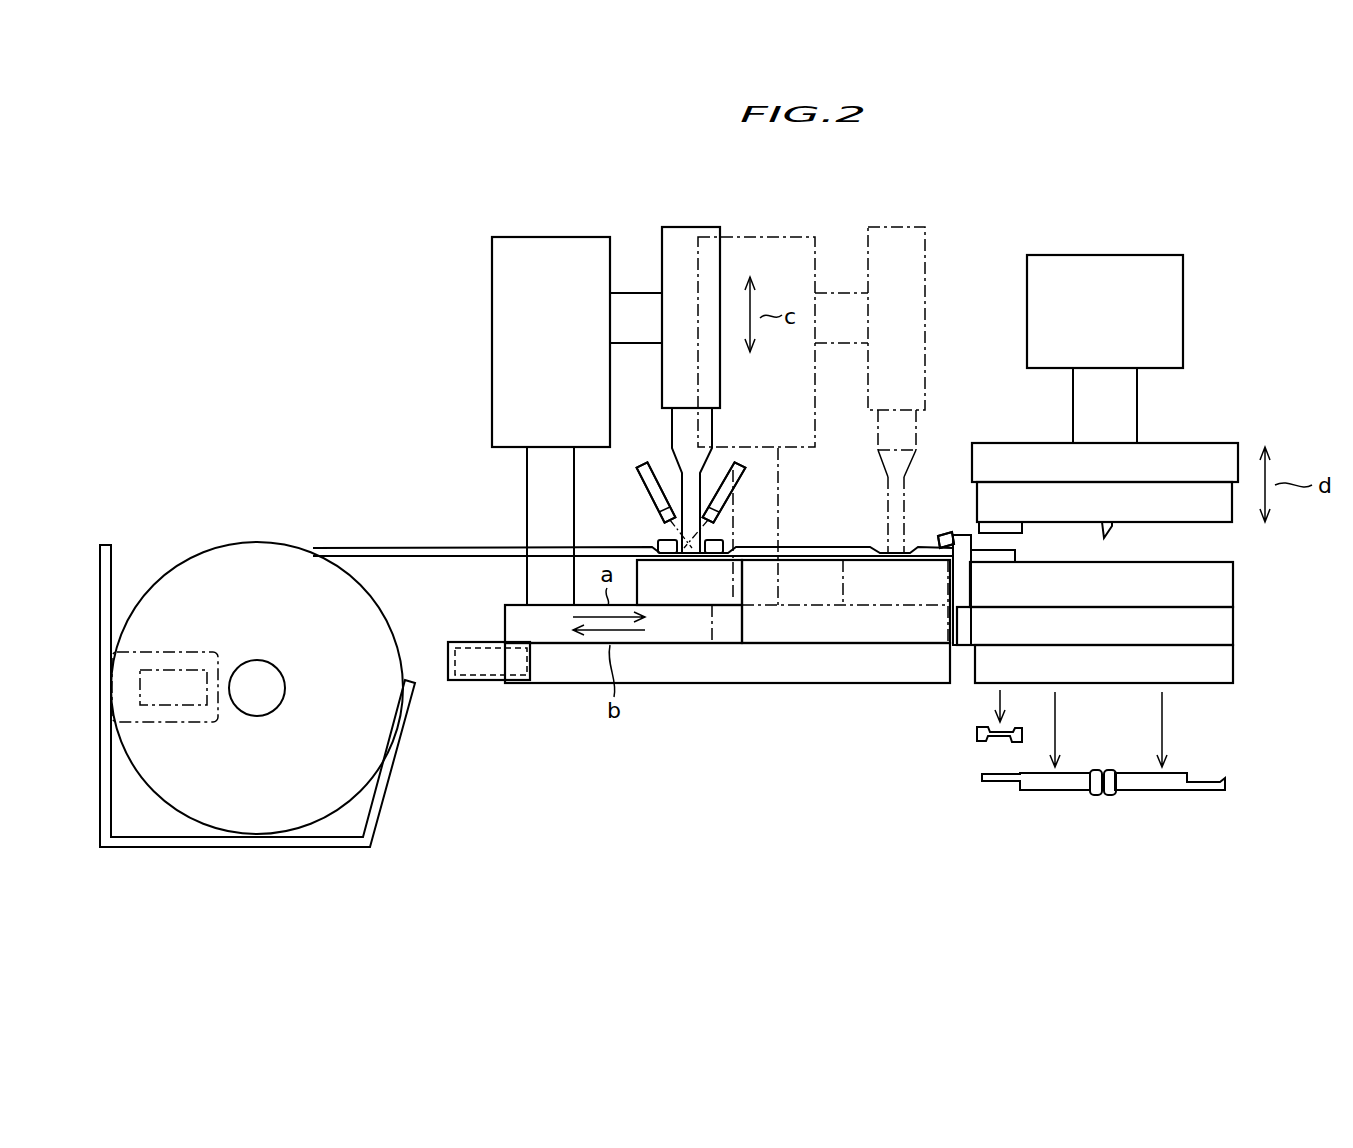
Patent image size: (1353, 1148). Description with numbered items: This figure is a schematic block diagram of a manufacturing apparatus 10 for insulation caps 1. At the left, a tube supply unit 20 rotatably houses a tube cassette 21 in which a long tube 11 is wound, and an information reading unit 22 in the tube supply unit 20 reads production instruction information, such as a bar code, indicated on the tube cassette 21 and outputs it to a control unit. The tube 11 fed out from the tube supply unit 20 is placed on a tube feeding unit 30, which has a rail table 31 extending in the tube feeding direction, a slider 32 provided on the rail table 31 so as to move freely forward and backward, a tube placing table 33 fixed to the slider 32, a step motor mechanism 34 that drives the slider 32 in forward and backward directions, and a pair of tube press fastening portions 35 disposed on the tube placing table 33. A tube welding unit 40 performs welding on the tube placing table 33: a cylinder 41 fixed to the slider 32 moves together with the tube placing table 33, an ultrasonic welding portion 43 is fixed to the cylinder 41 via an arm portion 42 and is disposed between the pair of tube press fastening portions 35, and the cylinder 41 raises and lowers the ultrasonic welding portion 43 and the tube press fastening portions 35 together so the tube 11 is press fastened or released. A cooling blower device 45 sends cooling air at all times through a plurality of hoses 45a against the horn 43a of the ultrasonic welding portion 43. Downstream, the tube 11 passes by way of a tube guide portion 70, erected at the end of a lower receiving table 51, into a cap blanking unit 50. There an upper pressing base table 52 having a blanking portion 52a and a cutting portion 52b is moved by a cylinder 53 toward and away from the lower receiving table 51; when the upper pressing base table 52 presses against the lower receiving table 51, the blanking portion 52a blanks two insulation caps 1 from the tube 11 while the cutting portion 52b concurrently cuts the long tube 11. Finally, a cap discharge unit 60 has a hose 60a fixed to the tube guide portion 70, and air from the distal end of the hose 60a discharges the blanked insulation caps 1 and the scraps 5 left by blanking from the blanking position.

The insulation cap 1 is at (1043, 790).
The scraps 5 is at (977, 732).
The manufacturing apparatus 10 is at (410, 228).
The tube 11 is at (432, 546).
The tube supply unit 20 is at (106, 545).
The tube cassette 21 is at (258, 545).
The information reading unit 22 is at (178, 705).
The tube feeding unit 30 is at (760, 685).
The rail table 31 is at (648, 675).
The slider 32 is at (545, 640).
The tube placing table 33 is at (690, 590).
The step motor mechanism 34 is at (475, 683).
The tube press fastening portions 35 is at (662, 541).
The tube welding unit 40 is at (744, 444).
The cylinder 41 is at (556, 245).
The arm portion 42 is at (632, 293).
The ultrasonic welding portion 43 is at (690, 225).
The horn 43a is at (680, 500).
The cooling blower device 45 is at (637, 470).
The hoses 45a is at (657, 480).
The cap blanking unit 50 is at (1210, 405).
The lower receiving table 51 is at (1235, 580).
The upper pressing base table 52 is at (1214, 492).
The blanking portion 52a is at (1005, 525).
The cutting portion 52b is at (1115, 537).
The cylinder 53 is at (1108, 255).
The cap discharge unit 60 is at (938, 540).
The hose 60a is at (948, 532).
The tube guide portion 70 is at (955, 645).